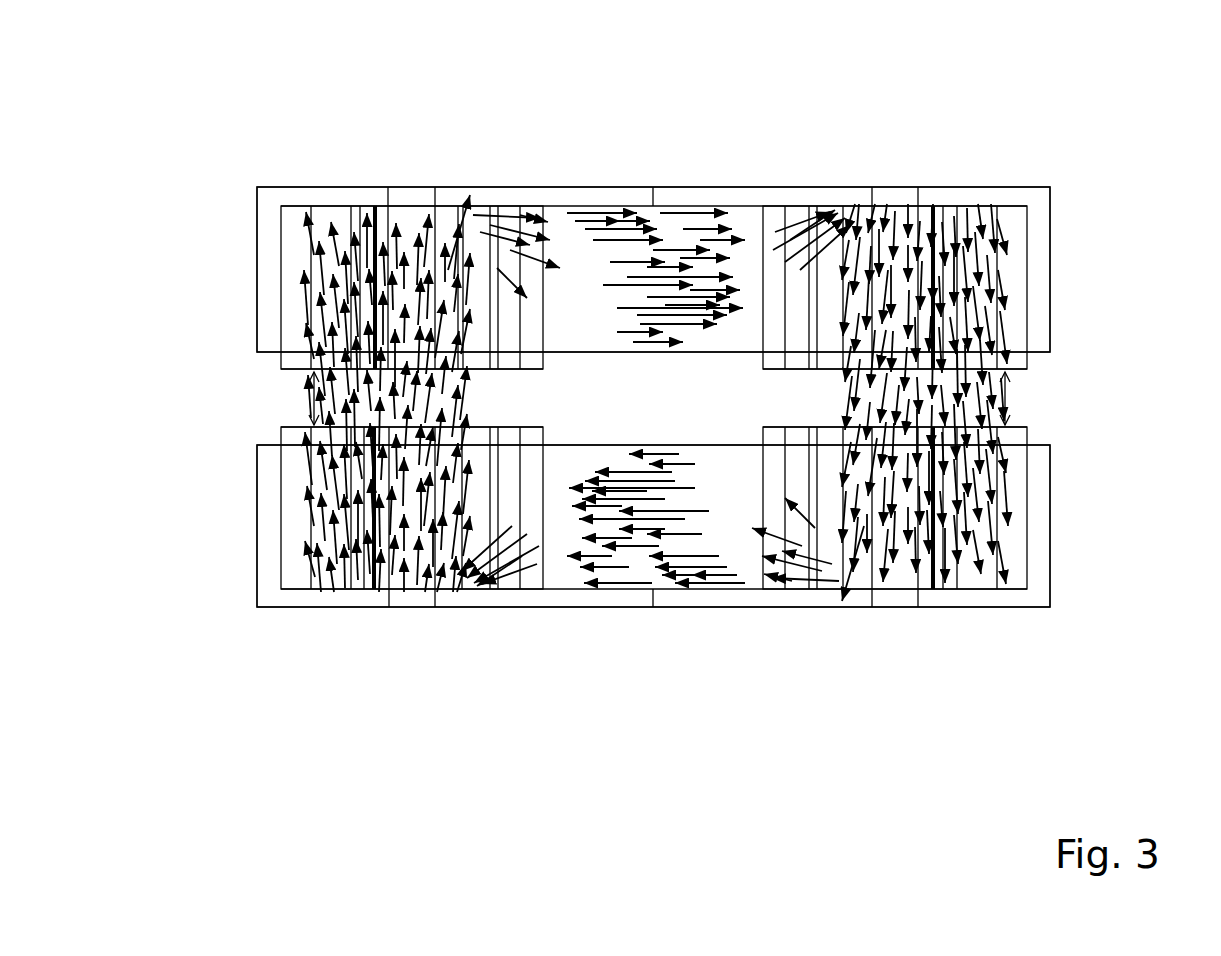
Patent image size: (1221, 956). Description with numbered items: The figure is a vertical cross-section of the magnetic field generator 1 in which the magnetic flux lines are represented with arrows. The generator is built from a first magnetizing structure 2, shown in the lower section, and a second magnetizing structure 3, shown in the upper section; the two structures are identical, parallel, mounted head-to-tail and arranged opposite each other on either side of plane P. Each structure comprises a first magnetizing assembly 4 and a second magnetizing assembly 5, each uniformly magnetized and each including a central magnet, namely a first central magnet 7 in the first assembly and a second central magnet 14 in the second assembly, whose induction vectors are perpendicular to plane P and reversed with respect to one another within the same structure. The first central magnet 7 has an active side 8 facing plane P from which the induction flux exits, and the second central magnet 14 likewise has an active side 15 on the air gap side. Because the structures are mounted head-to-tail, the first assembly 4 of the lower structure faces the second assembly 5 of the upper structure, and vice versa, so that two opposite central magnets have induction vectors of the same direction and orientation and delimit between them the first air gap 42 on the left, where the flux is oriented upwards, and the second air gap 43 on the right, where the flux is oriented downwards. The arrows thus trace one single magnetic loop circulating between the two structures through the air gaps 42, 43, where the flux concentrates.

The magnetic field generator 1 is at (1128, 112).
The first magnetizing structure 2 is at (1100, 505).
The second magnetizing structure 3 is at (1100, 278).
The first magnetizing assembly 4 is at (1060, 175).
The second magnetizing assembly 5 is at (248, 167).
The first central magnet 7 is at (899, 220).
The active side 8 is at (470, 427).
The second central magnet 14 is at (413, 215).
The active side 15 is at (487, 372).
The first air gap 42 is at (312, 406).
The second air gap 43 is at (1007, 400).